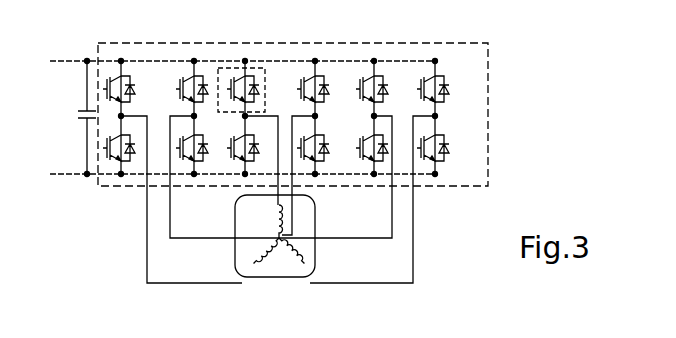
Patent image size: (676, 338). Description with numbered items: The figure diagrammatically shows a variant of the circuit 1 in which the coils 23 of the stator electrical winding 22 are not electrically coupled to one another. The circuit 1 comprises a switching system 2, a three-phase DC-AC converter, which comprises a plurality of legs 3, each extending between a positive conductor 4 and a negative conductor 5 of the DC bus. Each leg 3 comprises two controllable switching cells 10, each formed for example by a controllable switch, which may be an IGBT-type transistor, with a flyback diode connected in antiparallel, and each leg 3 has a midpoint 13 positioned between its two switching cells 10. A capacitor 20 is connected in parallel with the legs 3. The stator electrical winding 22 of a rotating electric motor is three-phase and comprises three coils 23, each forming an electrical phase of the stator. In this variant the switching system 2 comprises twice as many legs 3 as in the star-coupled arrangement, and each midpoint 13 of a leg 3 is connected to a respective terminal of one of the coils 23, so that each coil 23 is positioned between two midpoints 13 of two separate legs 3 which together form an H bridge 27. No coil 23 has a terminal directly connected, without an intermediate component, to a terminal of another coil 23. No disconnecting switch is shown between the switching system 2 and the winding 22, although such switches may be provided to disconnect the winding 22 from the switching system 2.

The circuit 1 is at (513, 61).
The switching system 2 is at (396, 43).
The leg 3 is at (353, 64).
The positive conductor 4 is at (106, 43).
The negative conductor 5 is at (110, 184).
The controllable switching cell 10 is at (266, 78).
The midpoint 13 is at (125, 114).
The capacitor 20 is at (82, 108).
The stator electrical winding 22 is at (318, 210).
The coil 23 is at (240, 246).
The H bridge 27 is at (352, 195).